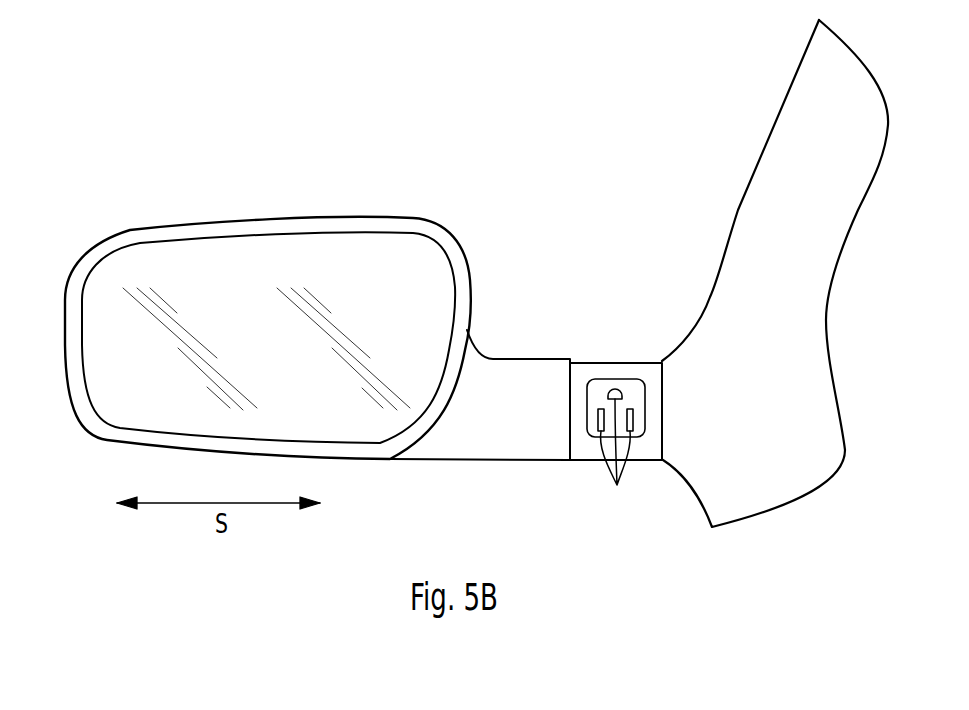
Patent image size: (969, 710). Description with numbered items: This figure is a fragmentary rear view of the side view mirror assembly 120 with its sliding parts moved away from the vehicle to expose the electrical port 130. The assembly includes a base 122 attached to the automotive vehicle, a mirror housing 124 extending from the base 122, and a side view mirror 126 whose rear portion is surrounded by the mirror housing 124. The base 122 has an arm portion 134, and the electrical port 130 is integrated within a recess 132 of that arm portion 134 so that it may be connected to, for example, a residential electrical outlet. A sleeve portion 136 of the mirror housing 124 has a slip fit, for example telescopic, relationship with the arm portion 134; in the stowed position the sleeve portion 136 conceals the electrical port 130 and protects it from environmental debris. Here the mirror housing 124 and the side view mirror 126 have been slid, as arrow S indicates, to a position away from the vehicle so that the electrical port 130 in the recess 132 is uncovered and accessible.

The side view mirror assembly 120 is at (327, 174).
The base 122 is at (741, 204).
The mirror housing 124 is at (243, 217).
The side view mirror 126 is at (413, 233).
The electrical port 130 is at (616, 456).
The recess 132 is at (616, 380).
The arm portion 134 is at (587, 452).
The sleeve portion 136 is at (514, 373).